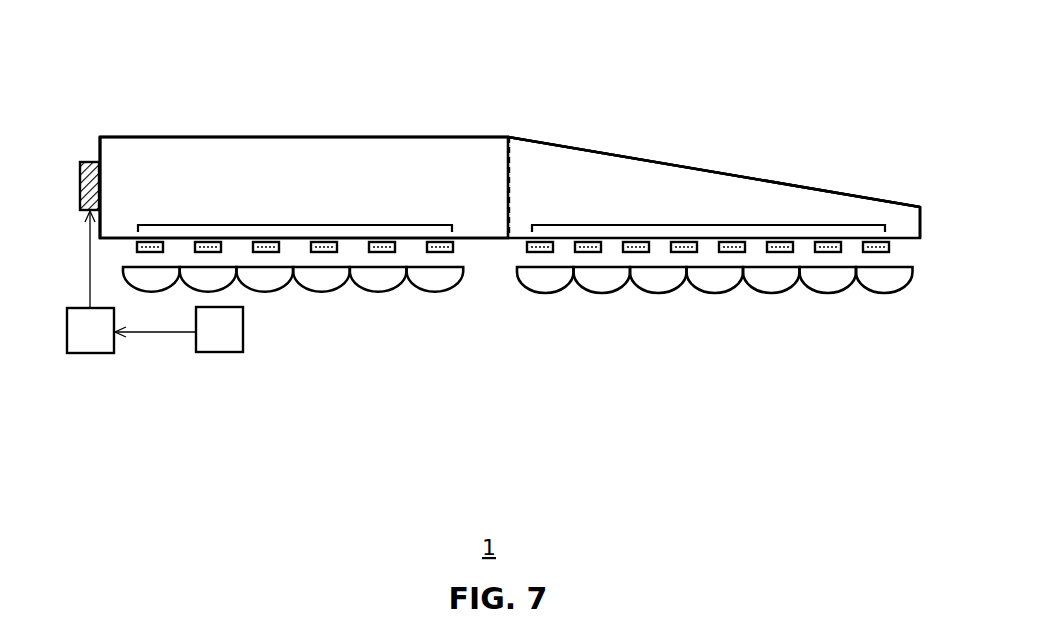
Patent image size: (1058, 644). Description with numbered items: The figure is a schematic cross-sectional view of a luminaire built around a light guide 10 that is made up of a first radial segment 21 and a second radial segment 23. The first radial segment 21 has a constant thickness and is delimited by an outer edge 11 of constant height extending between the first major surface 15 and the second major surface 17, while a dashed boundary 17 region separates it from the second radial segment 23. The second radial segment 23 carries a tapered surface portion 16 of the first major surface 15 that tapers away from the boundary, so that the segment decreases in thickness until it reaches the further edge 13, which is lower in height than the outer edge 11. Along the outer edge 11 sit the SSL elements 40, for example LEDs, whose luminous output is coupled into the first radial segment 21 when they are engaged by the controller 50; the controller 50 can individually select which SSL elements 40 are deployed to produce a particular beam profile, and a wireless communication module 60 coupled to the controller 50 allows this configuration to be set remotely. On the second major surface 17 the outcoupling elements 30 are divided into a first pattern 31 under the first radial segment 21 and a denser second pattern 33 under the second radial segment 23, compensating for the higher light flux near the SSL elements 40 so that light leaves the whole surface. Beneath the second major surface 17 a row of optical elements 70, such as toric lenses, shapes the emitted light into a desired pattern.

The light guide 10 is at (565, 147).
The outer edge 11 is at (98, 147).
The further edge 13 is at (923, 217).
The first major surface 15 is at (288, 138).
The tapered surface portion 16 is at (820, 192).
The second major surface 17 is at (478, 237).
The first radial segment 21 is at (393, 160).
The second radial segment 23 is at (657, 175).
The outcoupling elements 30 is at (513, 204).
The first pattern 31 is at (296, 225).
The second pattern 33 is at (708, 225).
The SSL elements 40 is at (80, 192).
The controller 50 is at (93, 353).
The wireless communication module 60 is at (222, 352).
The optical elements 70 is at (377, 293).